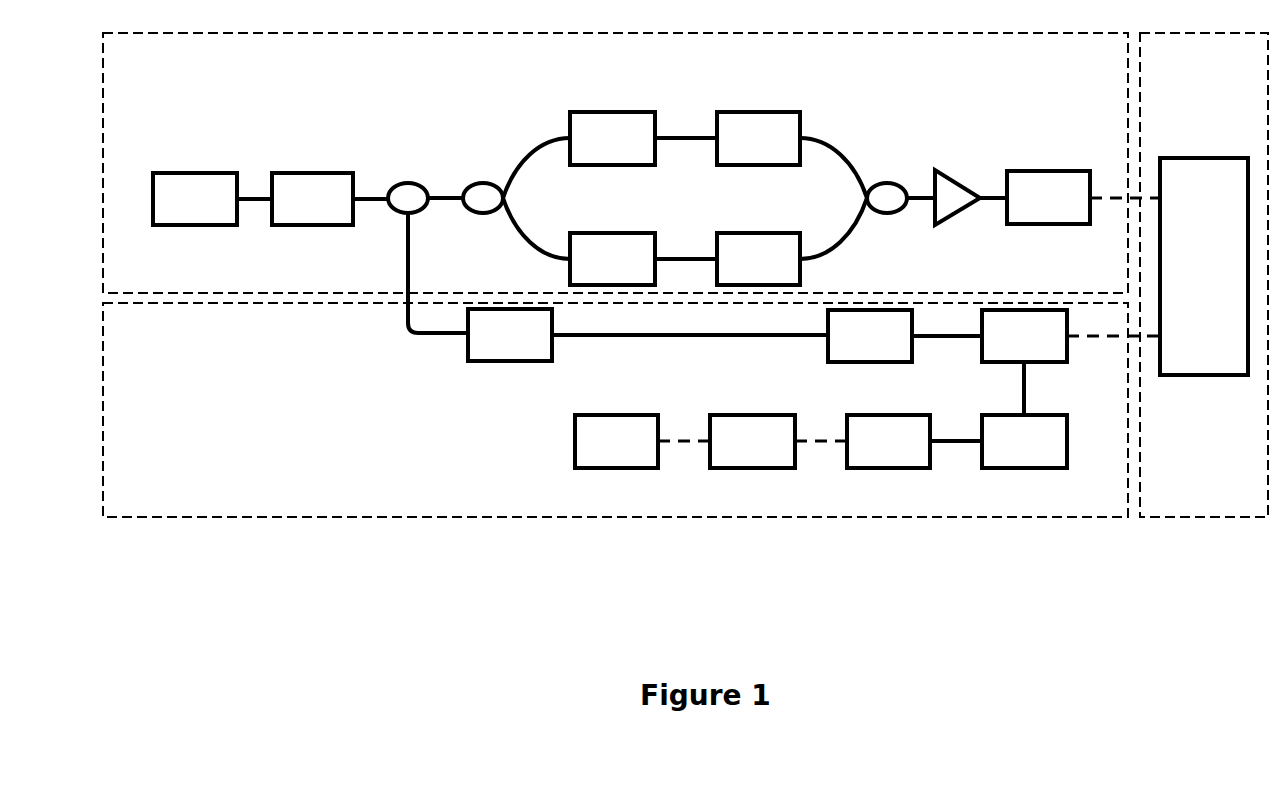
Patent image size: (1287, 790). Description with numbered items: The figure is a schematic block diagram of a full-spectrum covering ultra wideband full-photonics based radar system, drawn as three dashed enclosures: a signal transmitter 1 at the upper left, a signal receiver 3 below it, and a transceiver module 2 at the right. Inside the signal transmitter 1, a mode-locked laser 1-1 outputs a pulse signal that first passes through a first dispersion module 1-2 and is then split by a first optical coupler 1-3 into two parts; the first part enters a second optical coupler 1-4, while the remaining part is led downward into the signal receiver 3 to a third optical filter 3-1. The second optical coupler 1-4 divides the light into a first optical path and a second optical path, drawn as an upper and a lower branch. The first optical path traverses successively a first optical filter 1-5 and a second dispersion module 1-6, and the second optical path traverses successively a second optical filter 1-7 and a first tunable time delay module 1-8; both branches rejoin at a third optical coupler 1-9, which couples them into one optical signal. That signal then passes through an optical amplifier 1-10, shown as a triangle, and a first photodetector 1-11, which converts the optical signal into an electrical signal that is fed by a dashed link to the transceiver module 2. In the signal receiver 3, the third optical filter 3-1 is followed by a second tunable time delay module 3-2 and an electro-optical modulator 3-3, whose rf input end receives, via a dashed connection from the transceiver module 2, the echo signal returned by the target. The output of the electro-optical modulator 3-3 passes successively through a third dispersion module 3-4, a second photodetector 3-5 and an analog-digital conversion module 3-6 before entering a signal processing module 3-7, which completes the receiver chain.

The signal transmitter 1 is at (615, 163).
The transceiver module 2 is at (1205, 158).
The signal receiver 3 is at (615, 410).
The mode-locked laser 1-1 is at (195, 172).
The first dispersion module 1-2 is at (313, 172).
The first optical coupler 1-3 is at (400, 182).
The second optical coupler 1-4 is at (480, 182).
The first optical filter 1-5 is at (612, 112).
The second dispersion module 1-6 is at (758, 112).
The second optical filter 1-7 is at (615, 233).
The first tunable time delay module 1-8 is at (763, 233).
The third optical coupler 1-9 is at (880, 182).
The optical amplifier 1-10 is at (932, 170).
The first photodetector 1-11 is at (1047, 171).
The third optical filter 3-1 is at (507, 363).
The second tunable time delay module 3-2 is at (868, 364).
The electro-optical modulator 3-3 is at (980, 364).
The third dispersion module 3-4 is at (1022, 470).
The second photodetector 3-5 is at (890, 470).
The analog-digital conversion module 3-6 is at (748, 470).
The signal processing module 3-7 is at (615, 470).